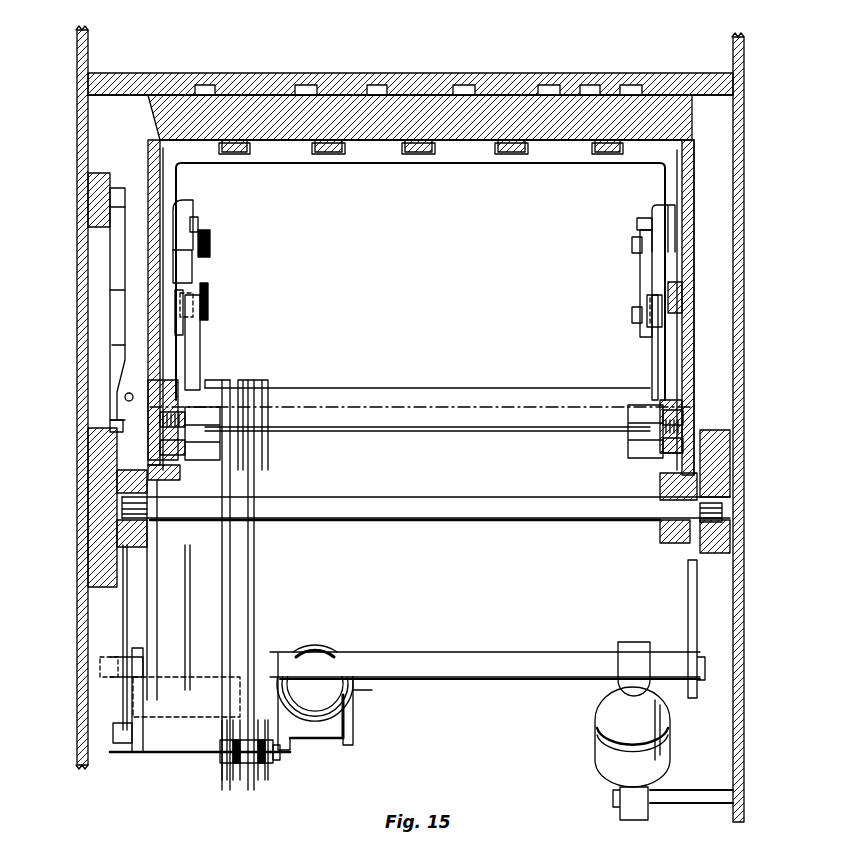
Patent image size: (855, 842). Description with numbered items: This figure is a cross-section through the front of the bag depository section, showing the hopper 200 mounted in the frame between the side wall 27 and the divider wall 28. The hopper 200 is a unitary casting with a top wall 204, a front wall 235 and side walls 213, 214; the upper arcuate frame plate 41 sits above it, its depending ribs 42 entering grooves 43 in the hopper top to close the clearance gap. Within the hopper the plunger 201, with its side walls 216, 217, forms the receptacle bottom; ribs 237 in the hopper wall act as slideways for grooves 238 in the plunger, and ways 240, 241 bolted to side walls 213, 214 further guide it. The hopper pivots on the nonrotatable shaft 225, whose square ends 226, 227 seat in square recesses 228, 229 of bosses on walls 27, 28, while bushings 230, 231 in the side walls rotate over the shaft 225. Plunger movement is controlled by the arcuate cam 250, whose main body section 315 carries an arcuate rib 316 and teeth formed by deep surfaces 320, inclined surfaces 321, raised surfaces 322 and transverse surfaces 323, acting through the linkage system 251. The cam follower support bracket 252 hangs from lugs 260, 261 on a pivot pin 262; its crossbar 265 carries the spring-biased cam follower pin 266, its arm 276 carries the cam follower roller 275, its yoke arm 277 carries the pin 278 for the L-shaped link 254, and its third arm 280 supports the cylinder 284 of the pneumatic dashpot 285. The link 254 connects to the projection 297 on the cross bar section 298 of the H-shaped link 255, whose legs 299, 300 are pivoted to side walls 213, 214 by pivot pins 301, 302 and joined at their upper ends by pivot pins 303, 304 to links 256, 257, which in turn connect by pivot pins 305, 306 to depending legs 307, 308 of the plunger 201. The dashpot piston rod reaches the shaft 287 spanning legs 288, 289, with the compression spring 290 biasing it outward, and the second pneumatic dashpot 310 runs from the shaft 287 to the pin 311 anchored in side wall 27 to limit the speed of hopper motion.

The divider wall 28 is at (82, 66).
The side wall 27 is at (745, 136).
The upper arcuate frame plate 41 is at (410, 65).
The depending ribs 42 is at (482, 93).
The grooves 43 is at (488, 97).
The front wall 235 is at (291, 95).
The top wall 204 is at (420, 102).
The grooves 238 is at (318, 150).
The ribs 237 is at (428, 147).
The side wall 213 is at (148, 193).
The side wall 214 is at (690, 262).
The plunger 201 is at (550, 162).
The side wall 216 is at (192, 208).
The side wall 217 is at (660, 215).
The depending leg 307 is at (200, 224).
The depending leg 308 is at (640, 230).
The pivot pin 305 is at (212, 245).
The pivot pin 306 is at (632, 253).
The arcuate main body section 315 is at (95, 203).
The arcuate rib 316 is at (118, 235).
The arcuate cam 250 is at (102, 262).
The way 240 is at (190, 283).
The link 256 is at (215, 303).
The pivot pin 303 is at (190, 330).
The leg 299 is at (182, 350).
The link 255 is at (206, 358).
The link 257 is at (645, 292).
The pivot pin 304 is at (635, 318).
The leg 300 is at (655, 352).
The way 241 is at (690, 295).
The hopper 200 is at (712, 352).
The projection 297 is at (278, 385).
The cross bar section 298 is at (462, 390).
The inclined surfaces 321 is at (113, 290).
The flat deep cam follower surfaces 320 is at (113, 345).
The flat raised surfaces 322 is at (124, 396).
The transverse flat surfaces 323 is at (110, 432).
The pivot pin 301 is at (200, 450).
The linkage system 251 is at (300, 462).
The pivot pin 302 is at (645, 458).
The square recess 228 is at (745, 495).
The square end 226 is at (740, 508).
The square recess 229 is at (90, 494).
The square end 227 is at (90, 512).
The nonrotatable shaft 225 is at (413, 507).
The bushing 231 is at (663, 542).
The bushing 230 is at (205, 552).
The lug 261 is at (252, 560).
The link 254 is at (262, 600).
The depending leg 288 is at (148, 598).
The radially extending arm 276 is at (120, 655).
The lug 260 is at (183, 635).
The compression spring 290 is at (345, 640).
The shaft 287 is at (448, 655).
The depending leg 289 is at (688, 612).
The cam follower roller 275 is at (100, 672).
The pneumatic dashpot 285 is at (380, 690).
The cylinder 284 is at (355, 705).
The second pneumatic dashpot 310 is at (597, 748).
The pin 311 is at (710, 797).
The cam follower pin 266 is at (115, 745).
The crossbar 265 is at (138, 752).
The pivot pin 262 is at (175, 720).
The cam follower support bracket 252 is at (175, 754).
The arm 277 is at (265, 780).
The pin 278 is at (277, 765).
The third radially extending arm 280 is at (335, 745).